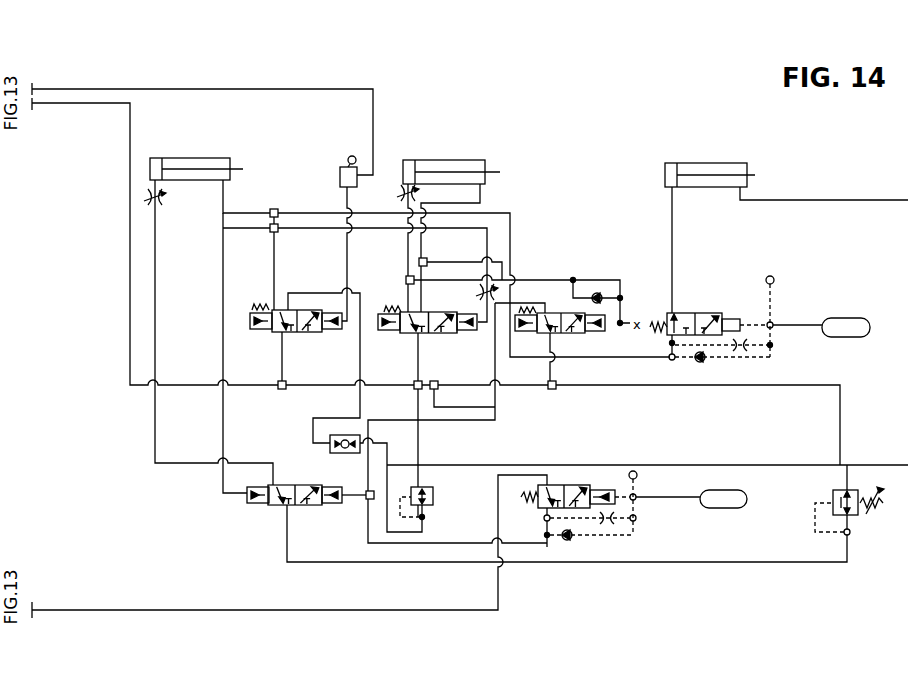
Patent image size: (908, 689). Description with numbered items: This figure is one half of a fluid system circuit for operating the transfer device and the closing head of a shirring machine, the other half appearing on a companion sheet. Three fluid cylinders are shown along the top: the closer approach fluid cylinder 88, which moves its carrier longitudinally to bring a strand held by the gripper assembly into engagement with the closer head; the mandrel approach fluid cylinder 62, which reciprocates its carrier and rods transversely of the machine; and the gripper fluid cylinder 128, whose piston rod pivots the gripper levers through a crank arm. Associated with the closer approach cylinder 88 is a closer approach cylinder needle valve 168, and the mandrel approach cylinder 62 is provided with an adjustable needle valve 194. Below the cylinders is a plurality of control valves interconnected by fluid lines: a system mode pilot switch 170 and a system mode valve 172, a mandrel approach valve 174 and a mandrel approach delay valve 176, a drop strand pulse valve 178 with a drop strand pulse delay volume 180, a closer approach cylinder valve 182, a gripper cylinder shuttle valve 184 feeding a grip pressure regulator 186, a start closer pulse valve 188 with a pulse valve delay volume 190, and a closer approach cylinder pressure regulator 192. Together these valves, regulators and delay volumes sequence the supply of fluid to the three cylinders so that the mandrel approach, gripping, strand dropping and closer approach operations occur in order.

The mandrel approach fluid cylinder 62 is at (487, 160).
The closer approach fluid cylinder 88 is at (233, 161).
The gripper fluid cylinder 128 is at (748, 162).
The closer approach cylinder needle valve 168 is at (166, 196).
The system mode pilot switch 170 is at (338, 171).
The system mode valve 172 is at (303, 339).
The mandrel approach valve 174 is at (440, 338).
The mandrel approach delay valve 176 is at (574, 342).
The drop strand pulse valve 178 is at (715, 311).
The drop strand pulse delay volume 180 is at (868, 318).
The closer approach cylinder valve 182 is at (312, 508).
The gripper cylinder shuttle valve 184 is at (320, 449).
The grip pressure regulator 186 is at (438, 497).
The start closer pulse valve 188 is at (584, 484).
The pulse valve delay volume 190 is at (760, 479).
The closer approach cylinder pressure regulator 192 is at (858, 514).
The adjustable needle valve 194 is at (401, 192).